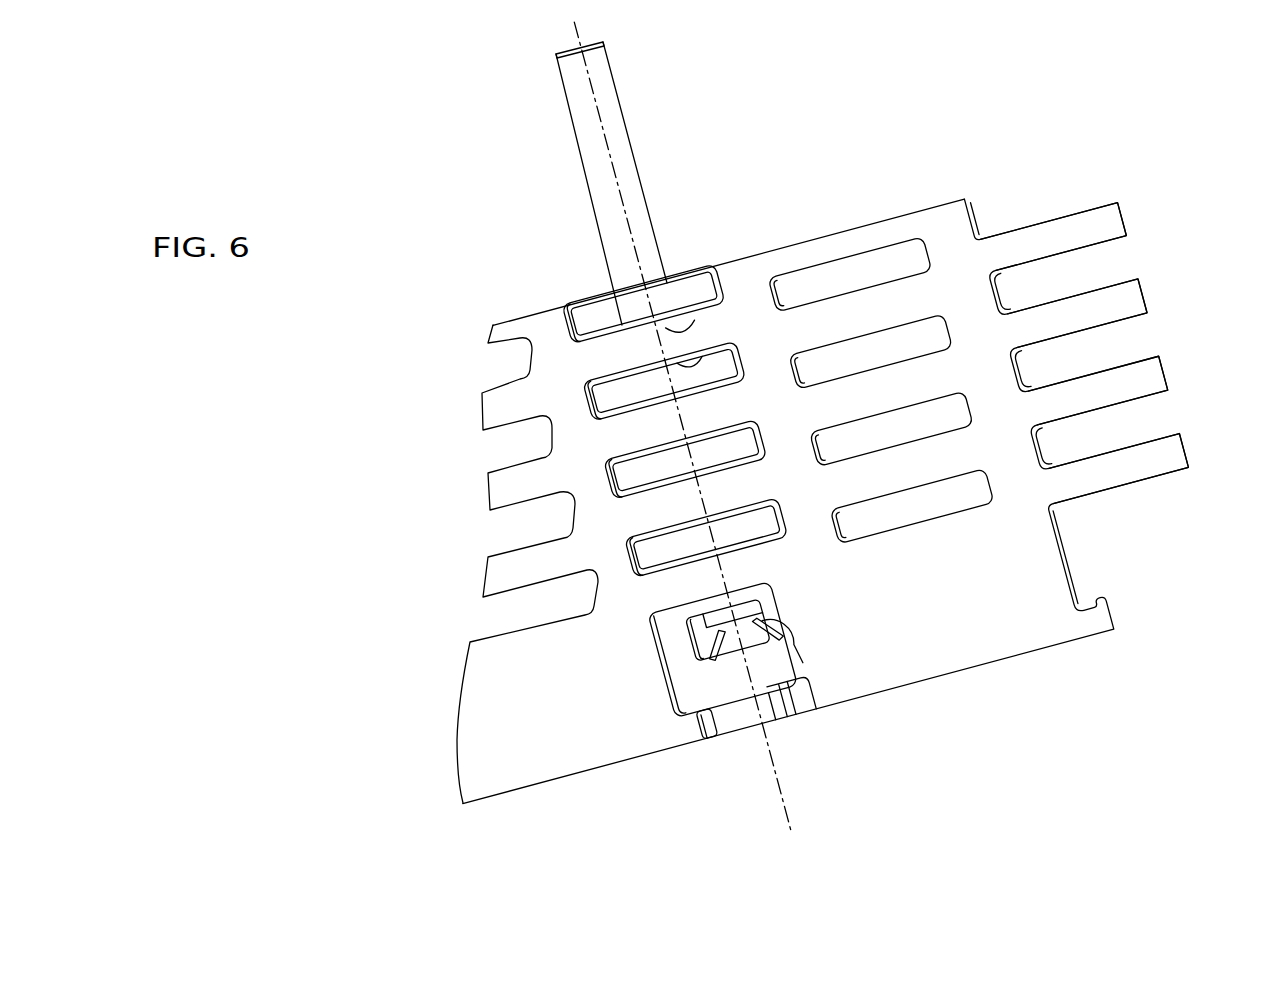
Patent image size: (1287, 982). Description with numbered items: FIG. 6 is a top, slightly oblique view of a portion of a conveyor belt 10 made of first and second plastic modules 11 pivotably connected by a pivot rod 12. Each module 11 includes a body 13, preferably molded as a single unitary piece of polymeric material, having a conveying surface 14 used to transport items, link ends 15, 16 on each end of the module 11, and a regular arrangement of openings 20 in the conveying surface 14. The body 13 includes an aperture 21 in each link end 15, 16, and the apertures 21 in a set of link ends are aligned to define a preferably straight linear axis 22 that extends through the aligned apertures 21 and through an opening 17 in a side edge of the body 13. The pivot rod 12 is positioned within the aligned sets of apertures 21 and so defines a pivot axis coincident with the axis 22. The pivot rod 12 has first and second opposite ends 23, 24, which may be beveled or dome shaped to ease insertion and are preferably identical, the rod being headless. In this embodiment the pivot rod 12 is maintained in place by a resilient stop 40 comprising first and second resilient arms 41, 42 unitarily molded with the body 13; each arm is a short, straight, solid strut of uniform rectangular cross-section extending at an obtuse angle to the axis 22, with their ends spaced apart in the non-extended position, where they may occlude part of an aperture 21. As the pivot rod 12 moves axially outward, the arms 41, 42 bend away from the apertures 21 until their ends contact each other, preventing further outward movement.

The conveyor belt 10 is at (422, 255).
The plastic module 11 is at (855, 236).
The pivot rod 12 is at (590, 181).
The body 13 is at (518, 322).
The conveying surface 14 is at (898, 591).
The link end 15 is at (622, 356).
The link end 16 is at (688, 300).
The opening 17 is at (750, 732).
The opening 20 is at (844, 363).
The aperture 21 is at (712, 365).
The axis 22 is at (602, 131).
The first end 23 is at (745, 652).
The second end 24 is at (577, 40).
The resilient stop 40 is at (762, 655).
The first resilient arm 41 is at (775, 628).
The second resilient arm 42 is at (735, 655).